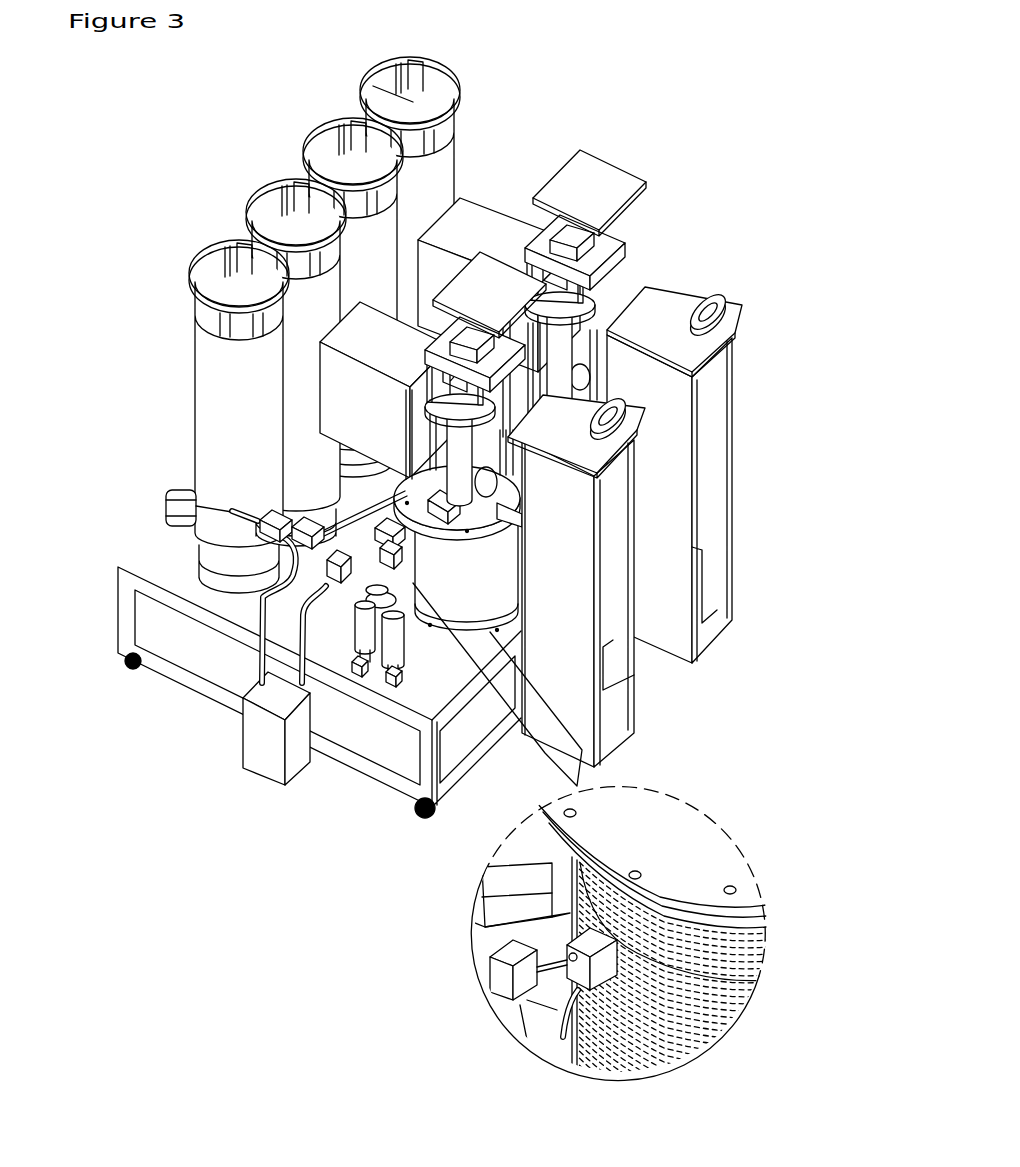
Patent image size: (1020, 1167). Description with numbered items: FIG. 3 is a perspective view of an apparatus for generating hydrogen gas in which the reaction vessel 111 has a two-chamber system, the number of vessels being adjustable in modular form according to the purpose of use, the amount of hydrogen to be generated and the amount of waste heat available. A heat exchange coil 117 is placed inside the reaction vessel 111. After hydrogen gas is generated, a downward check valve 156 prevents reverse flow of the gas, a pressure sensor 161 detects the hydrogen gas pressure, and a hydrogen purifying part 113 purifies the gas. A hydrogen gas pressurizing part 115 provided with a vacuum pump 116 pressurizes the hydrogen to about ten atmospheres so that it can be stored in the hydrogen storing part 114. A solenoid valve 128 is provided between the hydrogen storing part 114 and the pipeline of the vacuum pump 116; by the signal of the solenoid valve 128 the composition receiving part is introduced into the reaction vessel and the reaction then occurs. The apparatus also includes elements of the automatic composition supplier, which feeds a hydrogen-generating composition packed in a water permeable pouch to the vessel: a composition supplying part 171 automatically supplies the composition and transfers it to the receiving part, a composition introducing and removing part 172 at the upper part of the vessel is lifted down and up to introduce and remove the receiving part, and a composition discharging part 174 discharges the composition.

The reaction vessel 111 is at (597, 395).
The hydrogen purifying part 113 is at (377, 677).
The hydrogen storing part 114 is at (197, 398).
The hydrogen gas pressurizing part 115 is at (270, 763).
The vacuum pump 116 is at (319, 587).
The heat exchange coil 117 is at (770, 907).
The solenoid valve 128 is at (193, 548).
The downward check valve 156 is at (745, 975).
The pressure sensor 161 is at (493, 941).
The composition supplying part 171 is at (735, 490).
The composition introducing and removing part 172 is at (618, 168).
The composition discharging part 174 is at (500, 207).